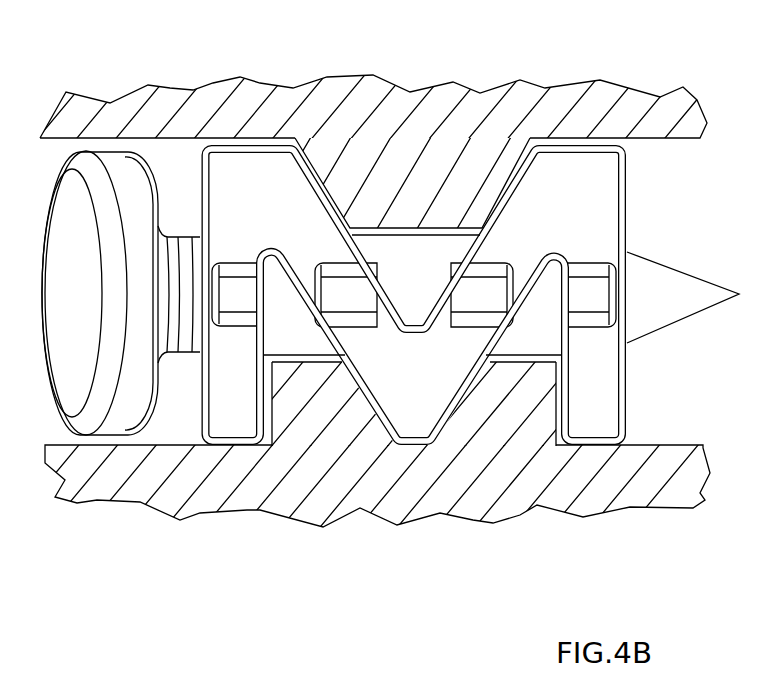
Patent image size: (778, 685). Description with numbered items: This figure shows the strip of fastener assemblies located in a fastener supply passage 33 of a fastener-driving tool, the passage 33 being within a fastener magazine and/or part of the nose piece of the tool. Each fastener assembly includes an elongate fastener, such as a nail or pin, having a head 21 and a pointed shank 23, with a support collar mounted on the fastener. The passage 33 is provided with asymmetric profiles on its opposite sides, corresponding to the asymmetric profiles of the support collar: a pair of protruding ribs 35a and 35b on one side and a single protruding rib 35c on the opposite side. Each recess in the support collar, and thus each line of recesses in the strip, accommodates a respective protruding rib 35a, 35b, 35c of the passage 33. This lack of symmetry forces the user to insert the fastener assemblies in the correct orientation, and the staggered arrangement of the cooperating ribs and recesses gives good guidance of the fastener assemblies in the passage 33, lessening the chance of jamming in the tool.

The head 21 is at (78, 370).
The pointed shank 23 is at (662, 275).
The passage 33 is at (665, 158).
The protruding rib 35a is at (541, 403).
The protruding rib 35b is at (333, 382).
The protruding rib 35c is at (464, 205).